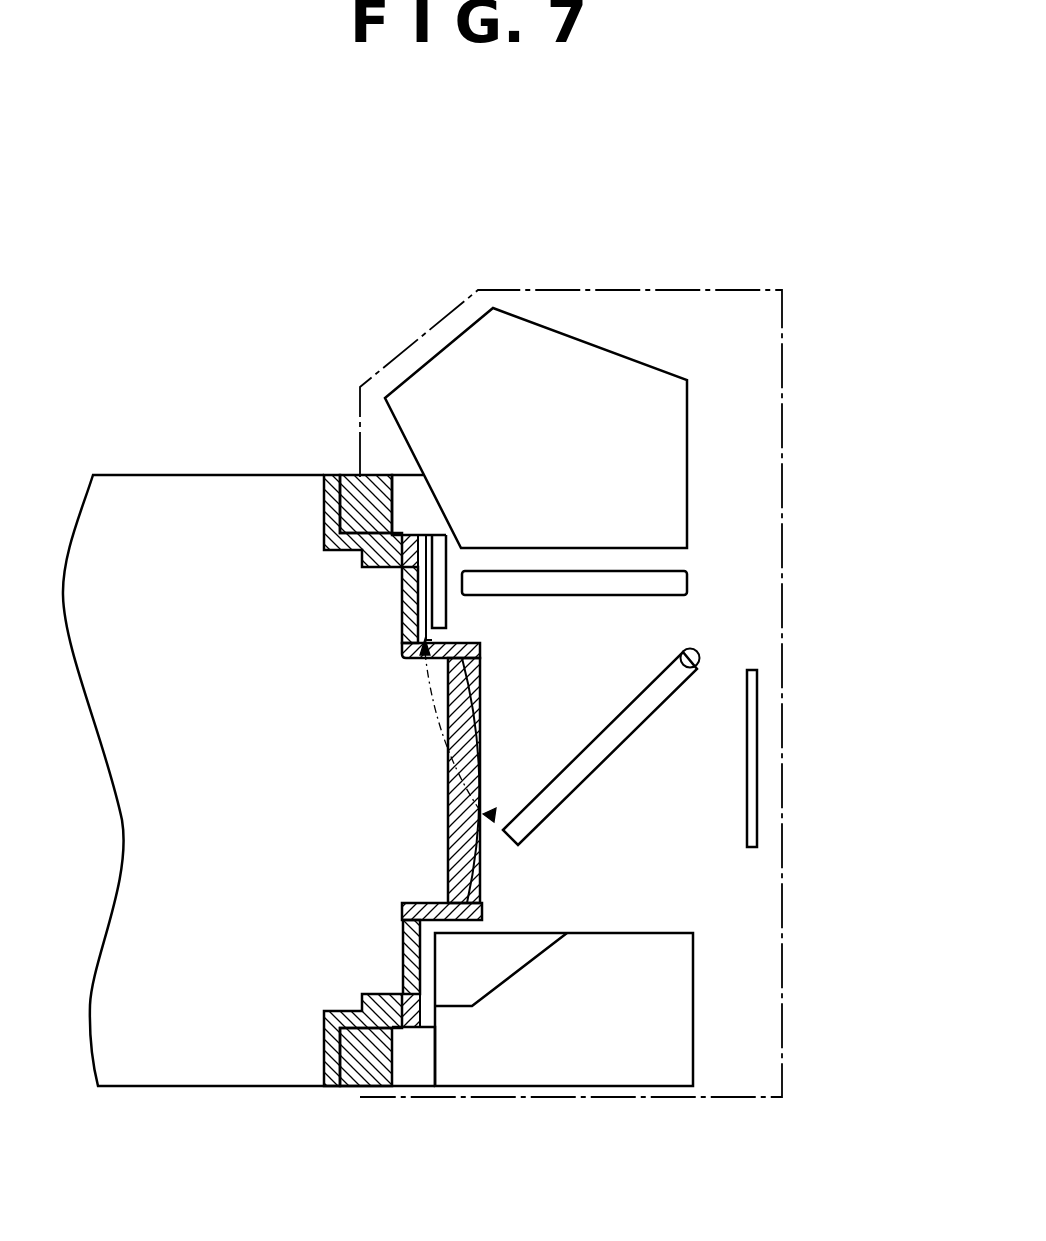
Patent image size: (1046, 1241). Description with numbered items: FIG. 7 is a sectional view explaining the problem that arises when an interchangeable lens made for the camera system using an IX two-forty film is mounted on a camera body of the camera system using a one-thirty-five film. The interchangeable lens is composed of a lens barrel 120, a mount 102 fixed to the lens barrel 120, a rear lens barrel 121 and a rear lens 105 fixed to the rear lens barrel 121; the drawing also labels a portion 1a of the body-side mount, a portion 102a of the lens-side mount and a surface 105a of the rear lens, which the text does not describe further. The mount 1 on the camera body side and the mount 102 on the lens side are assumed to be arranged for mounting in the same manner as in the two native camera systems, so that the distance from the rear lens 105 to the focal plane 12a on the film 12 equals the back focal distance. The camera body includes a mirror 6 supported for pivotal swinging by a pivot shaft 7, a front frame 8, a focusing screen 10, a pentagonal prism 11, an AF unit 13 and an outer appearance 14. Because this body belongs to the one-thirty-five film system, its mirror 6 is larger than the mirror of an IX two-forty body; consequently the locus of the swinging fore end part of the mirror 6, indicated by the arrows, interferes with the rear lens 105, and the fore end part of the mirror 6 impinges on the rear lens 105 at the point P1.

The mount 1 is at (357, 473).
The lens frame step 1a is at (385, 567).
The mirror 6 is at (657, 693).
The pivot shaft 7 is at (697, 650).
The front frame 8 is at (405, 488).
The focusing screen 10 is at (690, 583).
The pentagonal prism 11 is at (555, 347).
The film 12 is at (753, 806).
The focal plane 12a is at (750, 828).
The AF unit 13 is at (625, 1063).
The outer appearance 14 is at (648, 288).
The mount 102 is at (326, 472).
The mount ring flange 102a is at (402, 600).
The rear lens 105 is at (447, 805).
The lens surface 105a is at (483, 780).
The lens barrel 120 is at (136, 514).
The rear lens barrel 121 is at (400, 652).
The point P1 is at (489, 813).